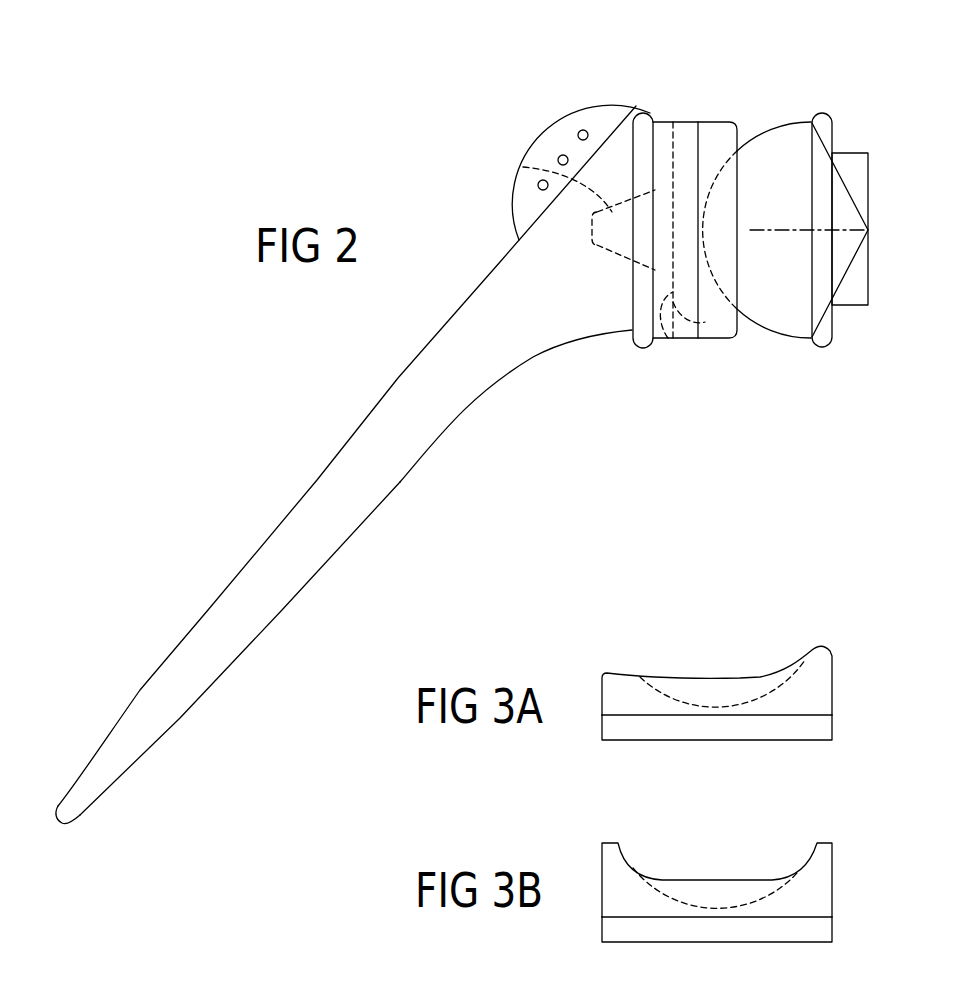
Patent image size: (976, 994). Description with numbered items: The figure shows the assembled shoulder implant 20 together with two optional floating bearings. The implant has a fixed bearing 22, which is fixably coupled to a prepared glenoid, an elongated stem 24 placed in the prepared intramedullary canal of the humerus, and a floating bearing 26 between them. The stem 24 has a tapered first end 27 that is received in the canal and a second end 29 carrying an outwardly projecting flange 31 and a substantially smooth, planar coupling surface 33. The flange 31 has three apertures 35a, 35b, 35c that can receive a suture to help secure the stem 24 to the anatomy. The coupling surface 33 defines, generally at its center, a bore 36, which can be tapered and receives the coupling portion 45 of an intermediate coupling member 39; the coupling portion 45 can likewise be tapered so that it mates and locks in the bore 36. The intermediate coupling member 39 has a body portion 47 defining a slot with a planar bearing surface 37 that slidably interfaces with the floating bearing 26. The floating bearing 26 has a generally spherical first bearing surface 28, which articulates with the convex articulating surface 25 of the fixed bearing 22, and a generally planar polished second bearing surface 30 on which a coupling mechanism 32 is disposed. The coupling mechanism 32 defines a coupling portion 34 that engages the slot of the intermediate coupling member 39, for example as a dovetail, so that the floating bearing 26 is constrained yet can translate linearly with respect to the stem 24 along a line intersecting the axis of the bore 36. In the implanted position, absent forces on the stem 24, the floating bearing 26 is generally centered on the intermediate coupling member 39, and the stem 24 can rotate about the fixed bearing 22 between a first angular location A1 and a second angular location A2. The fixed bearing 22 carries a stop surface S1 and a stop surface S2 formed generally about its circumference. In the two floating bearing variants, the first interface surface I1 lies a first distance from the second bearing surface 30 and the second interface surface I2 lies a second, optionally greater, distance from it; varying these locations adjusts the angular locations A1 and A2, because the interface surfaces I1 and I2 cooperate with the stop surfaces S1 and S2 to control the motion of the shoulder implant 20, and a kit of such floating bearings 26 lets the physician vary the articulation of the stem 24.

In FIG. 2, the shoulder implant 20 is at (312, 378).
In FIG. 2, the fixed bearing 22 is at (786, 380).
In FIG. 2, the stem 24 is at (392, 548).
In FIG. 2, the articulating surface 25 is at (783, 128).
In FIG. 2, the floating bearing 26 is at (724, 89).
In FIG. 3A, the floating bearing 26 is at (862, 692).
In FIG. 3B, the floating bearing 26 is at (862, 894).
In FIG. 2, the first end 27 is at (150, 731).
In FIG. 2, the first bearing surface 28 is at (716, 162).
In FIG. 3A, the first bearing surface 28 is at (778, 692).
In FIG. 3B, the first bearing surface 28 is at (778, 892).
In FIG. 2, the second end 29 is at (604, 420).
In FIG. 2, the second bearing surface 30 is at (668, 338).
In FIG. 3A, the second bearing surface 30 is at (797, 740).
In FIG. 3B, the second bearing surface 30 is at (797, 942).
In FIG. 2, the flange 31 is at (503, 92).
In FIG. 2, the coupling mechanism 32 is at (650, 95).
In FIG. 3A, the coupling mechanism 32 is at (586, 738).
In FIG. 3B, the coupling mechanism 32 is at (586, 940).
In FIG. 2, the coupling surface 33 is at (668, 148).
In FIG. 2, the coupling portion 34 is at (686, 327).
In FIG. 3A, the coupling portion 34 is at (825, 725).
In FIG. 3B, the coupling portion 34 is at (825, 927).
In FIG. 2, the aperture 35a is at (540, 189).
In FIG. 2, the aperture 35b is at (558, 158).
In FIG. 2, the aperture 35c is at (578, 134).
In FIG. 2, the bore 36 is at (592, 232).
In FIG. 2, the planar bearing surface 37 is at (712, 323).
In FIG. 2, the intermediate coupling member 39 is at (622, 160).
In FIG. 2, the coupling portion 45 is at (523, 167).
In FIG. 2, the body portion 47 is at (698, 122).
In FIG. 2, the stop surface S1 is at (822, 342).
In FIG. 2, the stop surface S2 is at (828, 122).
In FIG. 2, the first angular location A1 is at (842, 197).
In FIG. 2, the second angular location A2 is at (842, 257).
In FIG. 3A, the first interface surface I1 is at (822, 653).
In FIG. 3B, the first interface surface I1 is at (822, 853).
In FIG. 3A, the second interface surface I2 is at (615, 683).
In FIG. 3B, the second interface surface I2 is at (615, 852).